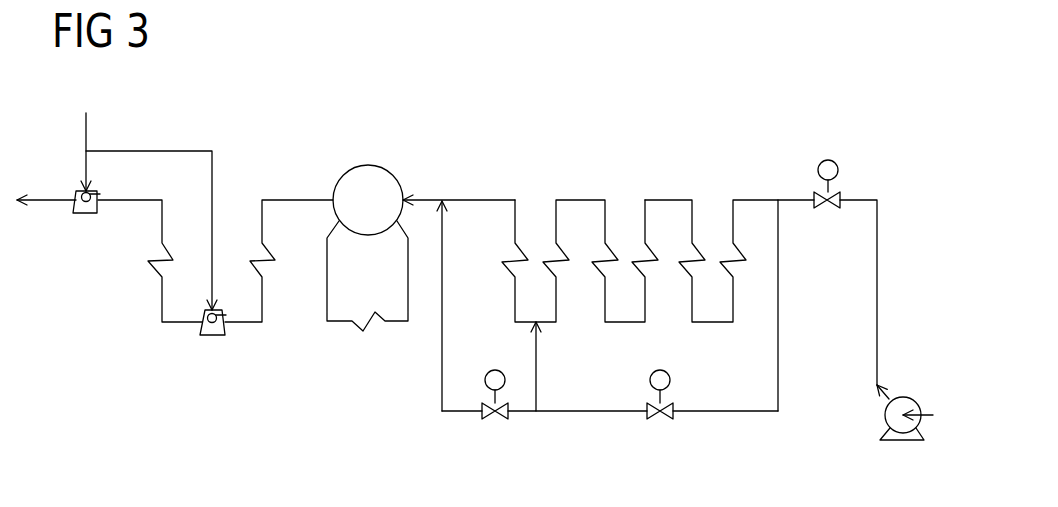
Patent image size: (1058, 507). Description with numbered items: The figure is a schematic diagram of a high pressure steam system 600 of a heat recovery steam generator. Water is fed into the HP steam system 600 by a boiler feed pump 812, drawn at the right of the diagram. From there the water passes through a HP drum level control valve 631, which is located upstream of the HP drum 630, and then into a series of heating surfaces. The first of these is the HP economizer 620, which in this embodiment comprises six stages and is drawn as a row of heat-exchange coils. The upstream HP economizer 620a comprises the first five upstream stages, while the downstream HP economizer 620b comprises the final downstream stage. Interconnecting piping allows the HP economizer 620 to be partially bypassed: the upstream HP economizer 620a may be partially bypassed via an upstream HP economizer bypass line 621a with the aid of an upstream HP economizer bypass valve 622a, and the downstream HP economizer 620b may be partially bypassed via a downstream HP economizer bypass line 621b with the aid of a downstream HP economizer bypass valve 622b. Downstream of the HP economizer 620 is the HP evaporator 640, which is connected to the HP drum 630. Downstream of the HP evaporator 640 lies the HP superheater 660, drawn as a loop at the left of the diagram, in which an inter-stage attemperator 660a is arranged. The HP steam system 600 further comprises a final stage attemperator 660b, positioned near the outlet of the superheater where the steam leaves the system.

The HP steam system 600 is at (475, 240).
The HP economizer 620 is at (640, 250).
The upstream HP economizer 620a is at (711, 268).
The downstream HP economizer 620b is at (580, 223).
The upstream HP economizer bypass line 621a is at (717, 411).
The downstream HP economizer bypass line 621b is at (460, 411).
The upstream HP economizer bypass valve 622a is at (666, 372).
The downstream HP economizer bypass valve 622b is at (495, 370).
The HP drum 630 is at (368, 165).
The HP drum level control valve 631 is at (830, 160).
The HP evaporator 640 is at (361, 312).
The HP superheater 660 is at (196, 298).
The inter-stage attemperator 660a is at (213, 336).
The final stage attemperator 660b is at (85, 214).
The boiler feed pump 812 is at (905, 397).